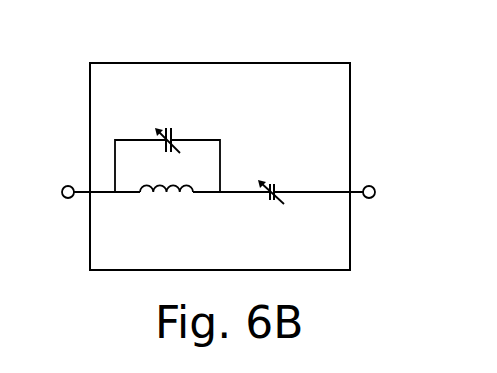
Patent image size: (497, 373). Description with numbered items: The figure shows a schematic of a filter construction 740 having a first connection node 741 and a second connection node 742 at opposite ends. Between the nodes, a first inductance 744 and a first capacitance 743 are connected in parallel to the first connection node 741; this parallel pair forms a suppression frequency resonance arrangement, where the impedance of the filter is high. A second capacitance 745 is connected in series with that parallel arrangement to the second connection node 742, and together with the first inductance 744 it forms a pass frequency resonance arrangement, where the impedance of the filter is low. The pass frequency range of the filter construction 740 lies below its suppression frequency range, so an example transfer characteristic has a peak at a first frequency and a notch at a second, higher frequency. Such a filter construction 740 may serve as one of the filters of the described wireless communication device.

The filter construction 740 is at (220, 166).
The first connection node 741 is at (68, 186).
The second connection node 742 is at (369, 186).
The first capacitance 743 is at (176, 130).
The first inductance 744 is at (193, 192).
The second capacitance 745 is at (278, 183).